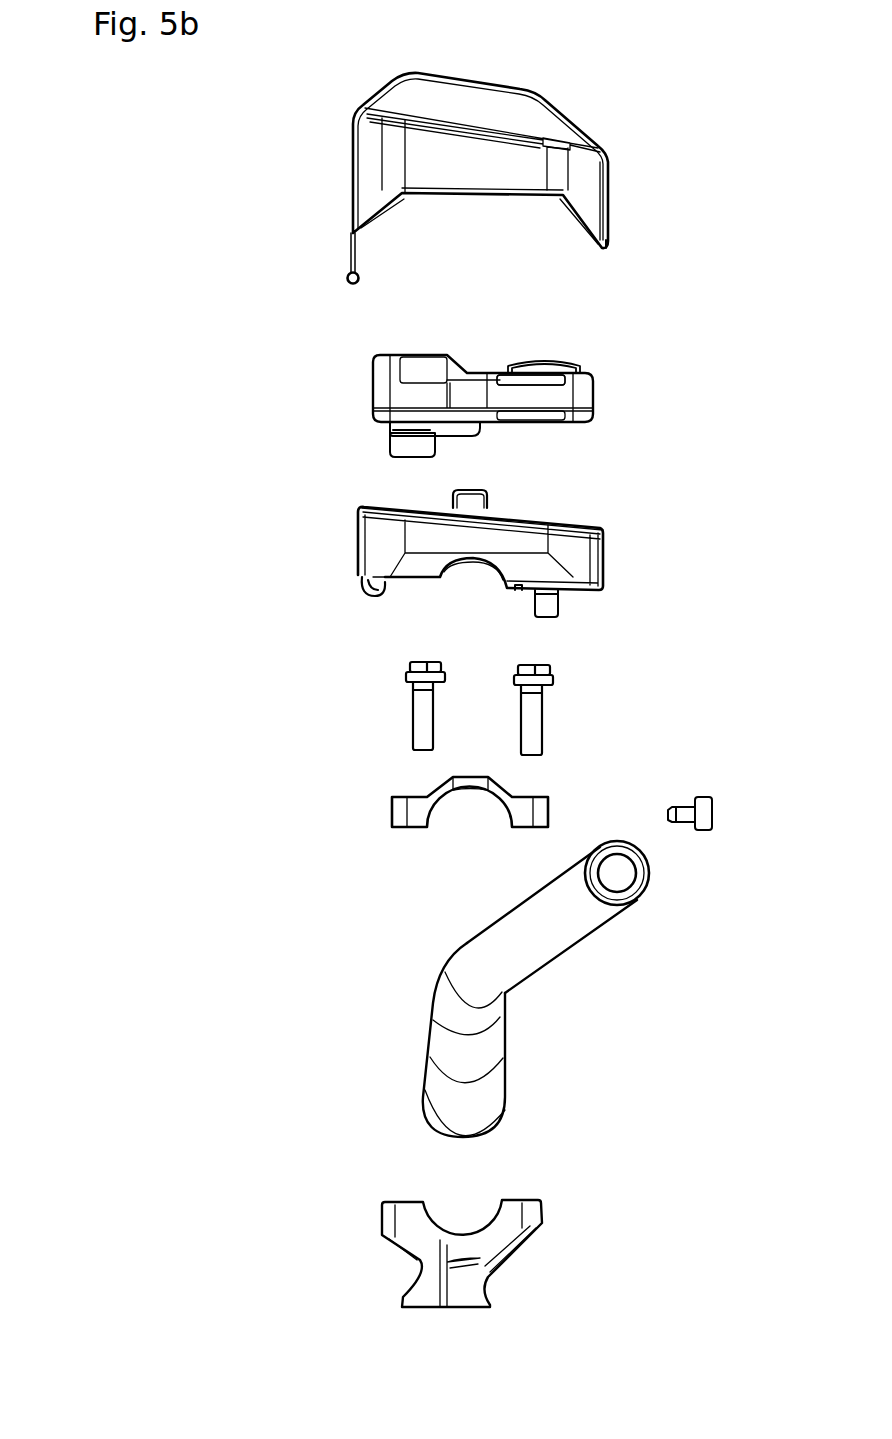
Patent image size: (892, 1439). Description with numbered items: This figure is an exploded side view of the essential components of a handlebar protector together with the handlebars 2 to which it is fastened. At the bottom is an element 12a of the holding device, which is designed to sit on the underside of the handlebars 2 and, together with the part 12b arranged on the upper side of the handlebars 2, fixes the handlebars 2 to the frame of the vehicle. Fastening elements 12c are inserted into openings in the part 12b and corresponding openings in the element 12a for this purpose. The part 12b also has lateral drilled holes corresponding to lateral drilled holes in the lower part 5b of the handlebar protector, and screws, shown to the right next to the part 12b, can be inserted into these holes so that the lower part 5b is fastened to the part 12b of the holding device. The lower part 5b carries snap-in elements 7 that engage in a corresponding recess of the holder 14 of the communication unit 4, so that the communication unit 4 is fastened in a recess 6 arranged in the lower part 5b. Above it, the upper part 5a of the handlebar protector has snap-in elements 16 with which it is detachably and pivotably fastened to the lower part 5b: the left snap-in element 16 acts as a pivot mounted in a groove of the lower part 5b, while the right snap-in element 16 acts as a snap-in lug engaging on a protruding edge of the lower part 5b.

The upper part 5a is at (610, 180).
The lower part 5b is at (580, 555).
The snap-in element 16 is at (353, 252).
The communication unit 4 is at (613, 398).
The holder 14 is at (515, 395).
The snap-in element 7 is at (452, 502).
The recess 6 is at (378, 508).
The fastening element 12c is at (410, 710).
The part of the holding device 12b is at (397, 813).
The handlebars 2 is at (558, 925).
The element of the holding device 12a is at (468, 1295).